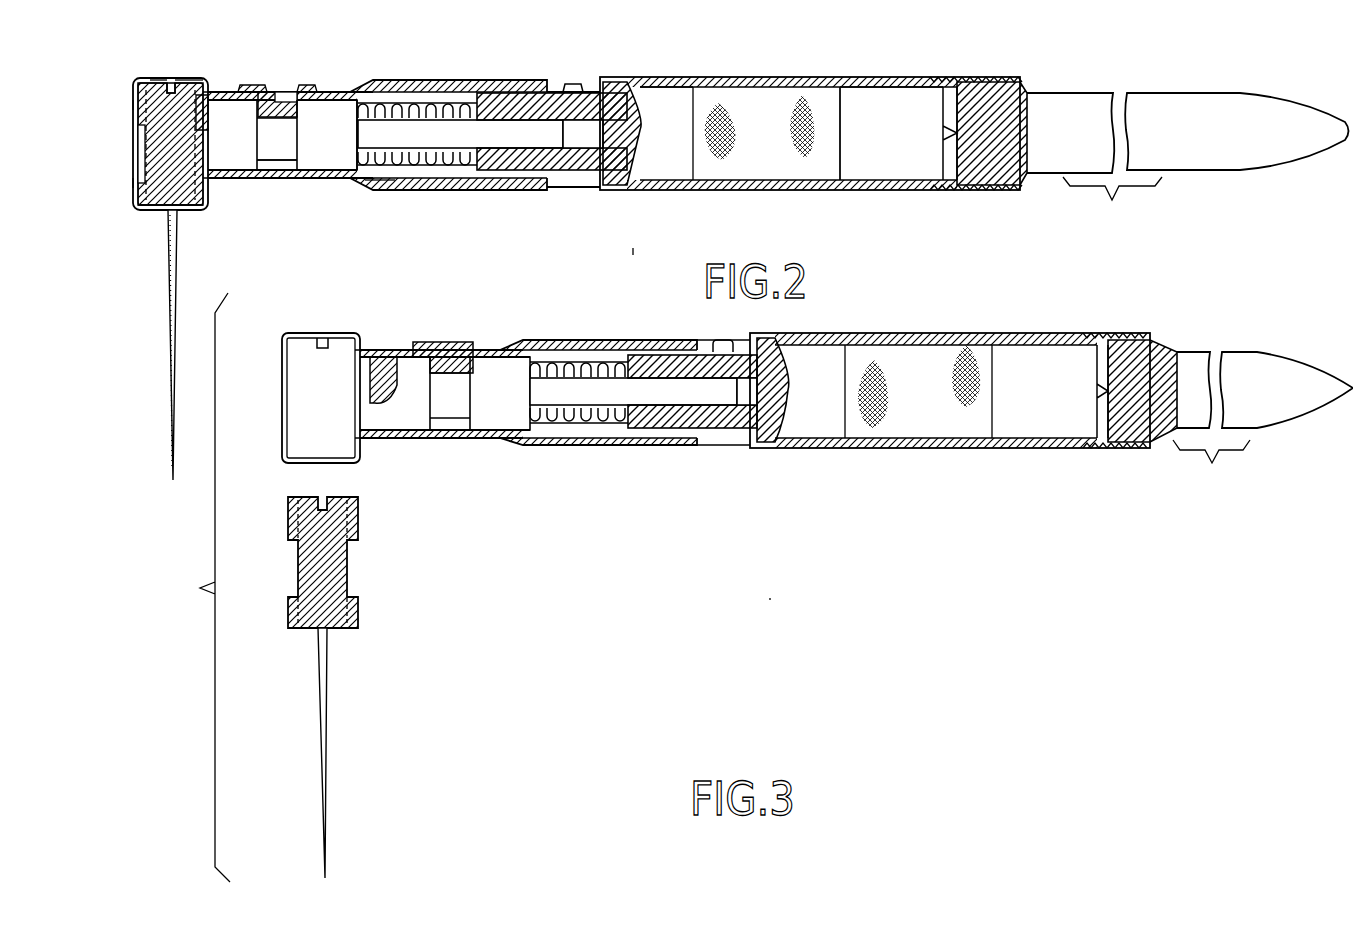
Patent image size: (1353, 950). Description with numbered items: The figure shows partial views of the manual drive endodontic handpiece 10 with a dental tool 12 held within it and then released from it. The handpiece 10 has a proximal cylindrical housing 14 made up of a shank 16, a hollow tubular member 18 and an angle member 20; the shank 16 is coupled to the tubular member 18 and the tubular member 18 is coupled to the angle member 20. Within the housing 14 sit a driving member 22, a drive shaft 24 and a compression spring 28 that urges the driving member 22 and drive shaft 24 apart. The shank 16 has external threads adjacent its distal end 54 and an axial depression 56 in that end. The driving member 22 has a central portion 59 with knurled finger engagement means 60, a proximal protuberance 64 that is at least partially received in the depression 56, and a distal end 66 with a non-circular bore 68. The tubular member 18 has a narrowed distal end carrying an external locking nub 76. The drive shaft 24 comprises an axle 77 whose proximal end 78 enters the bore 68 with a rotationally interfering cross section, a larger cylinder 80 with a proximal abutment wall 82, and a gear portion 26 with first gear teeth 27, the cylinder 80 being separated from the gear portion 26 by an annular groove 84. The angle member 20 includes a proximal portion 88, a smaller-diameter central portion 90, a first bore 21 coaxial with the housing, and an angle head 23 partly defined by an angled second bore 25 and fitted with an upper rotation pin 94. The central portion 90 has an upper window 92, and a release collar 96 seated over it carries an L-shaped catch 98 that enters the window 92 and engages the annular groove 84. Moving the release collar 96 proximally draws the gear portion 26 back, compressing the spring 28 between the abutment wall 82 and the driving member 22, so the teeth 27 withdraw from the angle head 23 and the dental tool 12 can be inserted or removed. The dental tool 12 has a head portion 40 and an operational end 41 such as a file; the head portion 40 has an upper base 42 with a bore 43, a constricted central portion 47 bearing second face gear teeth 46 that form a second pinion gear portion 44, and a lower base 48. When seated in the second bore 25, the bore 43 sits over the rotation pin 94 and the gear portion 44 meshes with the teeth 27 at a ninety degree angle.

In FIG. 2, the manual drive endodontic handpiece 10 is at (625, 245).
In FIG. 3, the manual drive endodontic handpiece 10 is at (798, 614).
In FIG. 2, the dental tool 12 is at (160, 195).
In FIG. 3, the dental tool 12 is at (400, 655).
In FIG. 2, the proximal cylindrical housing 14 is at (848, 205).
In FIG. 3, the proximal cylindrical housing 14 is at (765, 590).
In FIG. 2, the shank 16 is at (1188, 93).
In FIG. 2, the hollow tubular member 18 is at (680, 92).
In FIG. 2, the angle member 20 is at (380, 80).
In FIG. 3, the first bore 21 is at (562, 350).
In FIG. 2, the driving member 22 is at (890, 95).
In FIG. 2, the angle head 23 is at (133, 84).
In FIG. 3, the angle head 23 is at (284, 338).
In FIG. 3, the drive shaft 24 is at (530, 395).
In FIG. 3, the second bore 25 is at (322, 435).
In FIG. 2, the gear portion 26 is at (230, 150).
In FIG. 3, the gear portion 26 is at (405, 410).
In FIG. 2, the gear teeth 27 is at (205, 105).
In FIG. 3, the gear teeth 27 is at (392, 360).
In FIG. 2, the compression spring 28 is at (410, 166).
In FIG. 3, the compression spring 28 is at (562, 425).
In FIG. 2, the head portion 40 is at (165, 160).
In FIG. 2, the operational end 41 is at (170, 363).
In FIG. 2, the upper base 42 is at (152, 79).
In FIG. 2, the bore 43 is at (200, 85).
In FIG. 2, the second pinion gear portion 44 is at (140, 125).
In FIG. 2, the second face gear teeth 46 is at (134, 104).
In FIG. 2, the central portion 47 is at (134, 181).
In FIG. 2, the lower base 48 is at (140, 208).
In FIG. 2, the distal end 54 is at (985, 105).
In FIG. 2, the axial depression 56 is at (992, 182).
In FIG. 2, the central portion 59 is at (855, 110).
In FIG. 2, the finger engagement means 60 is at (770, 115).
In FIG. 2, the protuberance 64 is at (935, 110).
In FIG. 2, the distal end 66 is at (555, 120).
In FIG. 2, the bore 68 is at (580, 140).
In FIG. 3, the bore 68 is at (752, 395).
In FIG. 2, the external locking nub 76 is at (262, 92).
In FIG. 2, the axle 77 is at (480, 135).
In FIG. 3, the axle 77 is at (625, 395).
In FIG. 2, the proximal end 78 is at (520, 130).
In FIG. 3, the proximal end 78 is at (715, 390).
In FIG. 2, the cylinder 80 is at (330, 125).
In FIG. 2, the proximal abutment wall 82 is at (380, 186).
In FIG. 2, the annular groove 84 is at (285, 150).
In FIG. 2, the proximal portion 88 is at (456, 188).
In FIG. 2, the central portion 90 is at (325, 178).
In FIG. 2, the upper window 92 is at (286, 100).
In FIG. 2, the upper rotation pin 94 is at (172, 82).
In FIG. 3, the release collar 96 is at (446, 345).
In FIG. 2, the L-shaped catch 98 is at (275, 135).